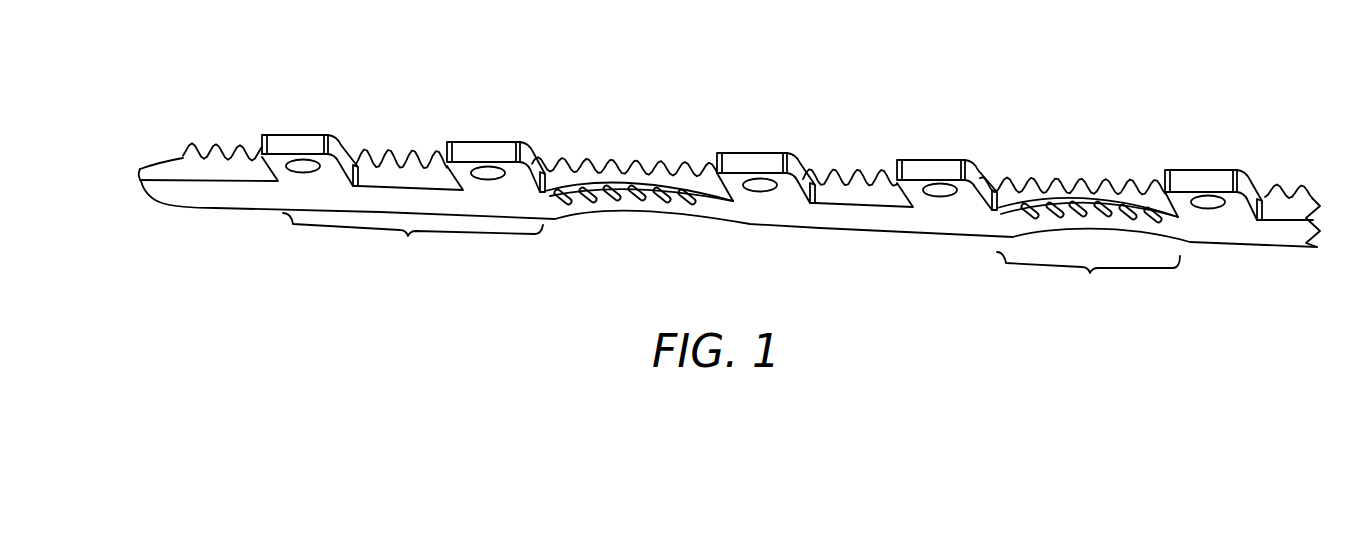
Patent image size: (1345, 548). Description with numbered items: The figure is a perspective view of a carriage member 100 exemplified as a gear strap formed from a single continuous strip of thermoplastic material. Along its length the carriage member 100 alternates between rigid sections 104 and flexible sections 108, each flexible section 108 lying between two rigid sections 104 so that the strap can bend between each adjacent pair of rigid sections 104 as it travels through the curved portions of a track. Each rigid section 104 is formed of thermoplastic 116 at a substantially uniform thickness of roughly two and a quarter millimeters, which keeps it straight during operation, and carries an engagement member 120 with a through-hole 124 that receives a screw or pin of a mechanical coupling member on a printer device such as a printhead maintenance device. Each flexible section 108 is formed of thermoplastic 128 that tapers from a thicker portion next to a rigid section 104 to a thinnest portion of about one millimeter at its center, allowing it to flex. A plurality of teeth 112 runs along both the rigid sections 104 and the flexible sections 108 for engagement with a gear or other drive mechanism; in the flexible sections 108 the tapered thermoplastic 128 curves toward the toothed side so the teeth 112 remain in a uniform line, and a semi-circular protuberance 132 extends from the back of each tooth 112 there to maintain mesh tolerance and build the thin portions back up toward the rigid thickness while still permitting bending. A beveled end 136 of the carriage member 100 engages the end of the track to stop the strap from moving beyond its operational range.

The carriage member 100 is at (710, 90).
The rigid section 104 is at (408, 236).
The flexible section 108 is at (1090, 273).
The teeth 112 is at (218, 152).
The thermoplastic 116 is at (400, 177).
The engagement member 120 is at (320, 143).
The through-hole 124 is at (303, 172).
The thermoplastic 128 is at (1043, 192).
The semi-circular protuberance 132 is at (1103, 202).
The beveled end 136 is at (143, 182).